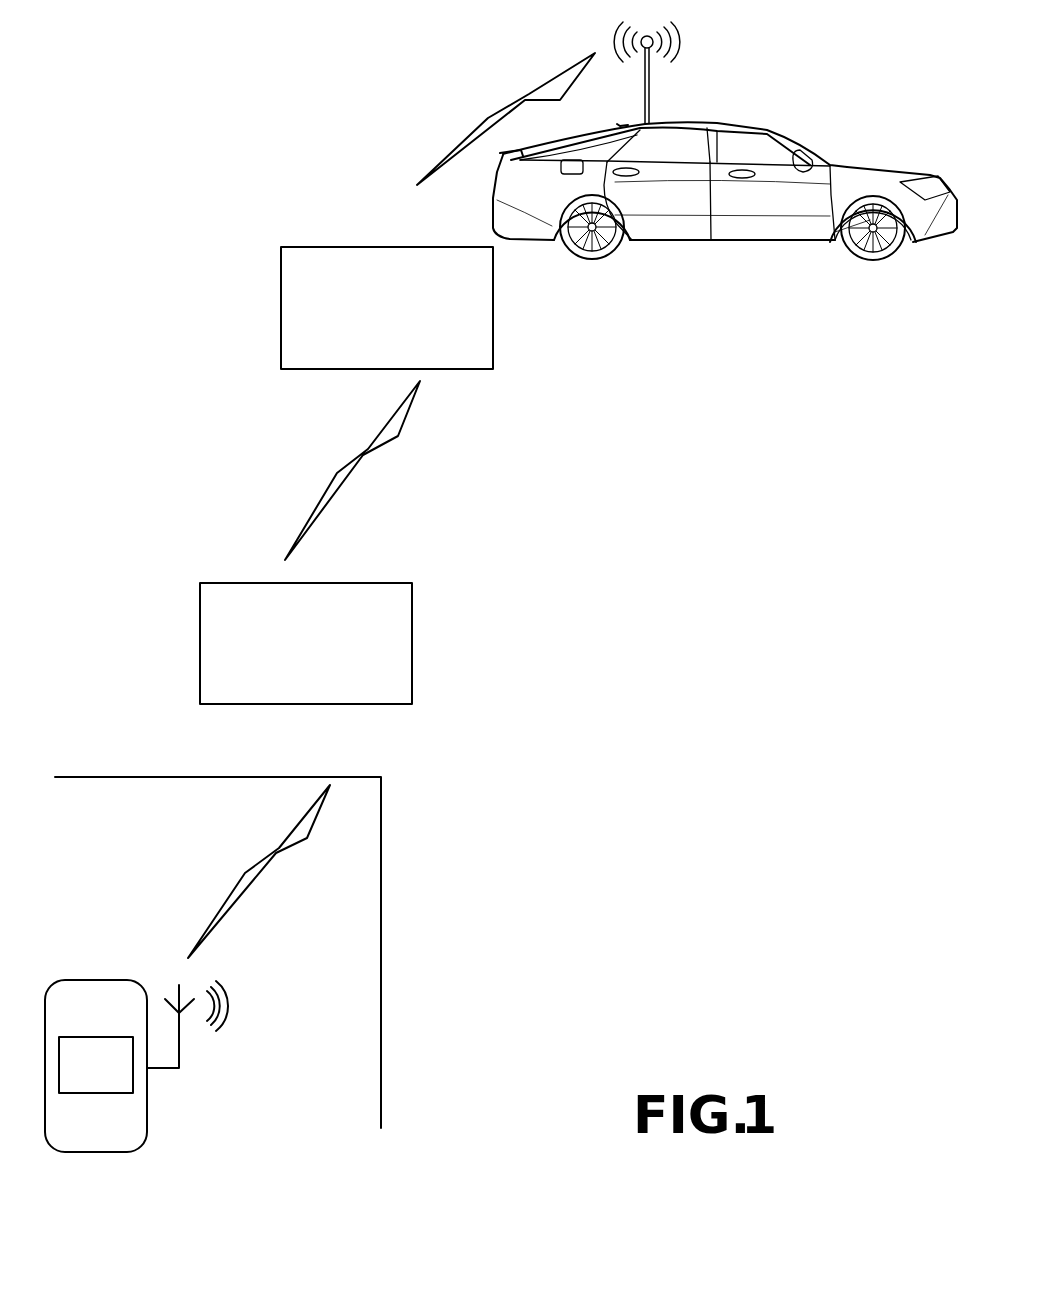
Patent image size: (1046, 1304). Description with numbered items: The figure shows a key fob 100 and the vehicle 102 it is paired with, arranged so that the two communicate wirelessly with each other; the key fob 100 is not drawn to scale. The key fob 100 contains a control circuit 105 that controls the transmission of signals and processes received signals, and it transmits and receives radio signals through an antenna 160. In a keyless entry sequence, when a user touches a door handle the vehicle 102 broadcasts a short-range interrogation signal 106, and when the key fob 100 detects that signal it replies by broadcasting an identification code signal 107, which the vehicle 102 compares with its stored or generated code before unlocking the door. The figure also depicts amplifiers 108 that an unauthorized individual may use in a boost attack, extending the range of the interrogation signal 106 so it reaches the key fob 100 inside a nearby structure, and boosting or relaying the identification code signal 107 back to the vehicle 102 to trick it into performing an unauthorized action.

The key fob 100 is at (96, 1066).
The vehicle 102 is at (890, 167).
The control circuit 105 is at (77, 1078).
The interrogation signal 106 is at (525, 92).
The identification code signal 107 is at (252, 897).
The amplifier 108 is at (361, 319).
The antenna 160 is at (179, 985).